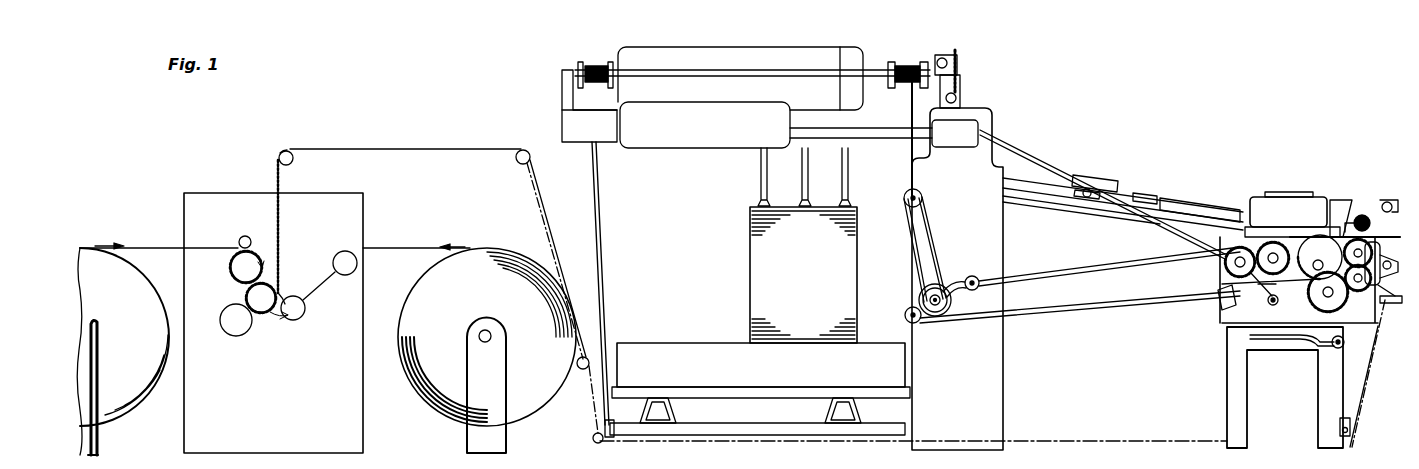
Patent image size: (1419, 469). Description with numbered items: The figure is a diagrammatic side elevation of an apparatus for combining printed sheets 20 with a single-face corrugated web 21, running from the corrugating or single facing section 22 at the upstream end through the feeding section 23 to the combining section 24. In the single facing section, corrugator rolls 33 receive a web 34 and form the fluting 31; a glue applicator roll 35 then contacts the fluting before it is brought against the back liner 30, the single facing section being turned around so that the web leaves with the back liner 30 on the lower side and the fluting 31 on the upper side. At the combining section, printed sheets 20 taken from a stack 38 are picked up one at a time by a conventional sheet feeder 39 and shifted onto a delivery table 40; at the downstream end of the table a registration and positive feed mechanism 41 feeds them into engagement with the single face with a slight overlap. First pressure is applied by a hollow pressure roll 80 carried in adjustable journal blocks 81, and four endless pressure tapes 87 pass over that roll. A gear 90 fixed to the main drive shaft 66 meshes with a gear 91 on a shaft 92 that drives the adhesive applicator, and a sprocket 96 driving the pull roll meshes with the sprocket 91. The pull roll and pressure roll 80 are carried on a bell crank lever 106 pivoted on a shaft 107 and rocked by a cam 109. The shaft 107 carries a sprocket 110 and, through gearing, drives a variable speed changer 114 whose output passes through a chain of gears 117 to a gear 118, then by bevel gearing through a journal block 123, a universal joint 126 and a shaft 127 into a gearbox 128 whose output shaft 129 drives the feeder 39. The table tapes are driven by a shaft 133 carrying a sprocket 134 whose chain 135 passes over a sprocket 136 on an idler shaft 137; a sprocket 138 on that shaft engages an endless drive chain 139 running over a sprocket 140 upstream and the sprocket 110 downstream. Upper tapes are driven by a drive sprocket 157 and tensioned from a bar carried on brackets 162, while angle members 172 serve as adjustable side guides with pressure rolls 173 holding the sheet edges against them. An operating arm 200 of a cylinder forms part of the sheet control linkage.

The printed sheets 20 is at (752, 209).
The single-face corrugated web 21 is at (556, 226).
The single facing section 22 is at (396, 101).
The feeding section 23 is at (1074, 90).
The combining section 24 is at (1369, 164).
The back liner 30 is at (403, 247).
The fluting 31 is at (290, 151).
The corrugator rolls 33 is at (238, 277).
The web 34 is at (160, 248).
The glue applicator roll 35 is at (240, 334).
The stack 38 is at (812, 285).
The sheet feeder 39 is at (796, 39).
The delivery table 40 is at (1084, 217).
The registration and positive feed mechanism 41 is at (1353, 194).
The main drive shaft 66 is at (1365, 302).
The hollow pressure roll 80 is at (1364, 216).
The journal blocks 81 is at (1372, 225).
The endless pressure tapes 87 is at (1393, 200).
The gear 90 is at (1322, 303).
The gear 91 is at (1370, 290).
The shaft 92 is at (1315, 268).
The sprocket 96 is at (1320, 257).
The bell crank lever 106 is at (1295, 302).
The shaft 107 is at (1336, 240).
The cam 109 is at (1270, 304).
The sprocket 110 is at (1319, 246).
The variable speed changer 114 is at (1275, 200).
The chain of gears 117 is at (1225, 280).
The gear 118 is at (1225, 310).
The journal block 123 is at (1210, 254).
The universal joint 126 is at (1205, 244).
The shaft 127 is at (1133, 218).
The gearbox 128 is at (957, 147).
The output shaft 129 is at (888, 140).
The shaft 133 is at (925, 198).
The sprocket 134 is at (930, 222).
The chain 135 is at (935, 240).
The sprocket 136 is at (950, 288).
The idler shaft 137 is at (936, 316).
The sprocket 138 is at (920, 330).
The endless drive chain 139 is at (1080, 312).
The sprocket 140 is at (904, 317).
The drive sprocket 157 is at (1072, 204).
The brackets 162 is at (1112, 178).
The angle members 172 is at (1228, 206).
The pressure rolls 173 is at (1212, 196).
The operating arm 200 is at (1335, 199).